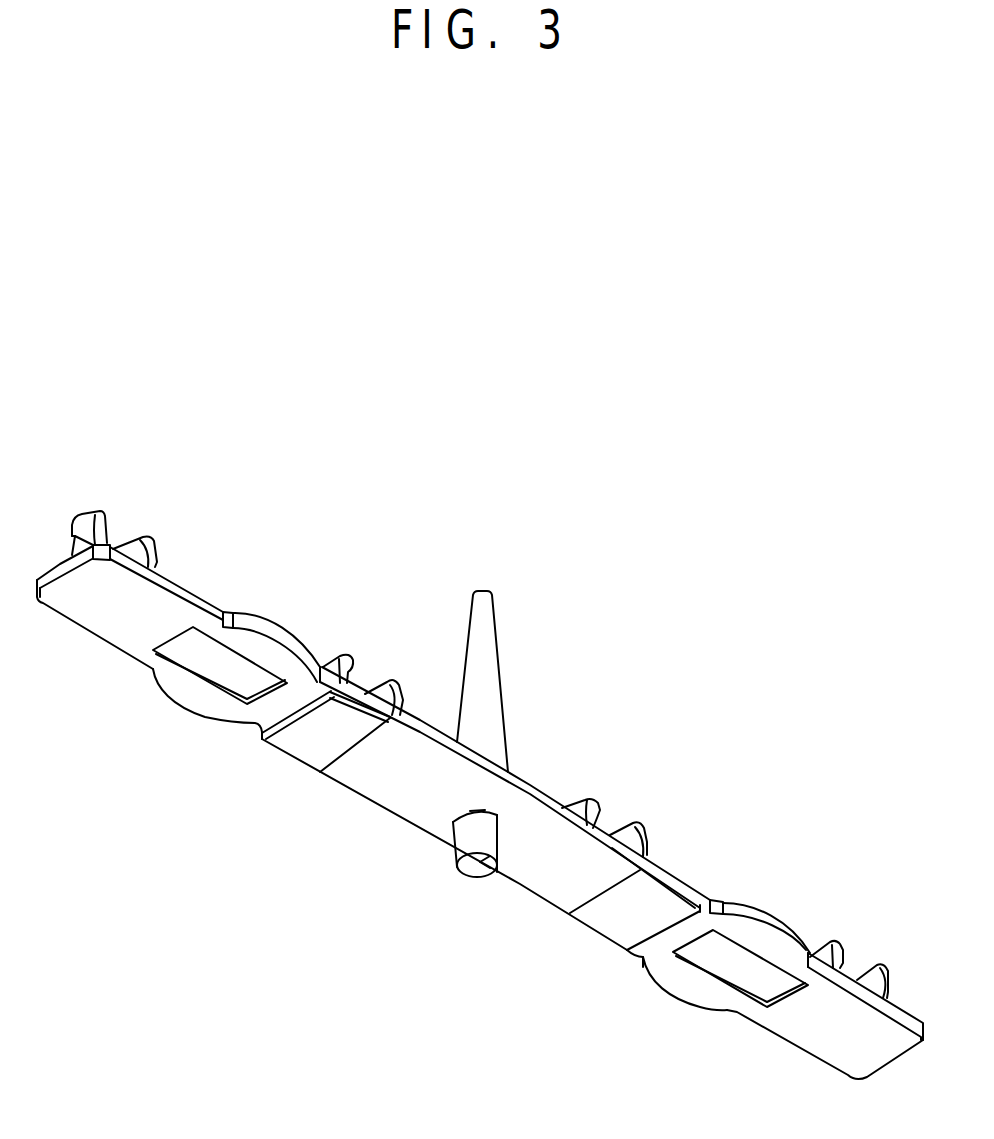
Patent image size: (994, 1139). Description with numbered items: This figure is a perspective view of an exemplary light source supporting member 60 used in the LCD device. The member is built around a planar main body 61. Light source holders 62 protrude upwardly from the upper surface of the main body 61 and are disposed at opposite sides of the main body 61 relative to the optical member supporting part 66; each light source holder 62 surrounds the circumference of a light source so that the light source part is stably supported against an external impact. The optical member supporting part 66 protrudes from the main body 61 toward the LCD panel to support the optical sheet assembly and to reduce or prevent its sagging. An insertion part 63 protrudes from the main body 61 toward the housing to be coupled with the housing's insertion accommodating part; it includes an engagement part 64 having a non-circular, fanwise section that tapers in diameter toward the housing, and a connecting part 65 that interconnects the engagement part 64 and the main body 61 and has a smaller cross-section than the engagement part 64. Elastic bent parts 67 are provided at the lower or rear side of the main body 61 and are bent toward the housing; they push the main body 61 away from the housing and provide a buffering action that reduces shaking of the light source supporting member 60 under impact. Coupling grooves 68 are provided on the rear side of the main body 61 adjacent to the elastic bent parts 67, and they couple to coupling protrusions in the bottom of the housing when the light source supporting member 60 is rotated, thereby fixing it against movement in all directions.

The light source supporting member 60 is at (677, 445).
The main body 61 is at (520, 782).
The light source holder 62 is at (640, 827).
The insertion part 63 is at (392, 910).
The engagement part 64 is at (457, 850).
The connecting part 65 is at (452, 813).
The optical member supporting part 66 is at (487, 672).
The elastic bent part 67 is at (612, 940).
The coupling groove 68 is at (718, 962).